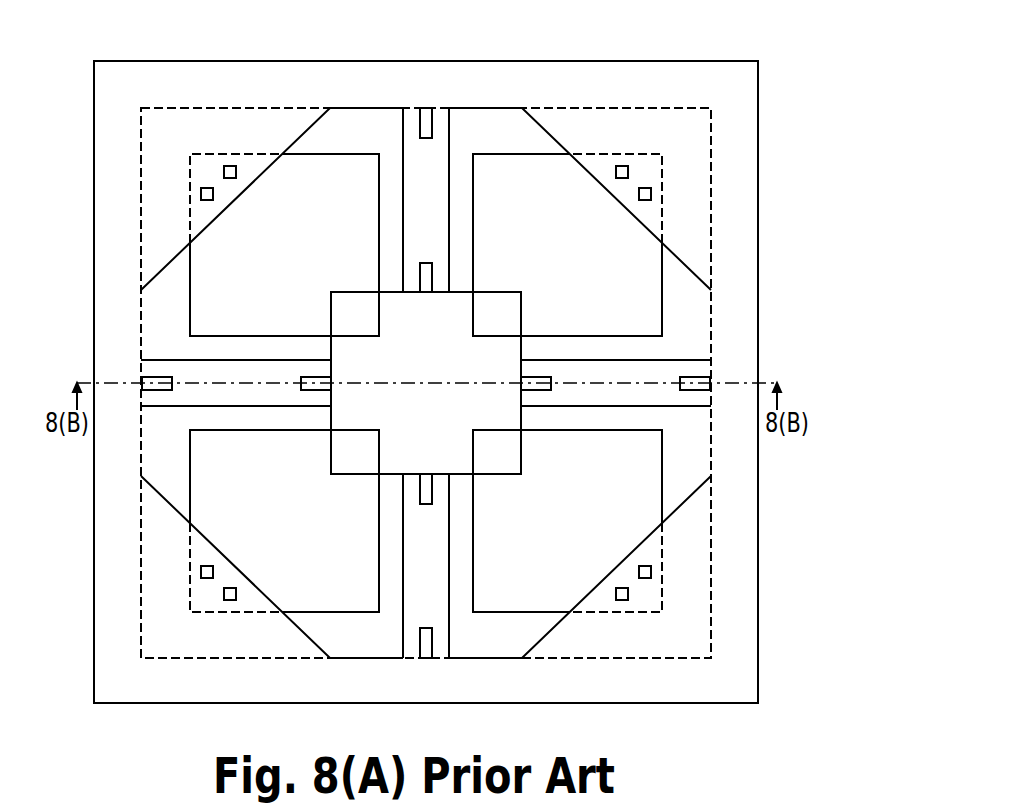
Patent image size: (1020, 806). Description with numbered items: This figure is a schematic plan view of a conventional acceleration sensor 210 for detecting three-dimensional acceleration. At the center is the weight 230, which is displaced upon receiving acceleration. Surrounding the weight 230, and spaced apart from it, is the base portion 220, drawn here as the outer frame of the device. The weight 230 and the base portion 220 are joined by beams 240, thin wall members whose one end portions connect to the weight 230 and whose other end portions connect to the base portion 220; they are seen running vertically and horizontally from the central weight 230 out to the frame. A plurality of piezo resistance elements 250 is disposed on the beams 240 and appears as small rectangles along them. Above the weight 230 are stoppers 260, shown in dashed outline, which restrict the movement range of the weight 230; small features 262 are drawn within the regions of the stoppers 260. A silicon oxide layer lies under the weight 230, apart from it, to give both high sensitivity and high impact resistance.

The acceleration sensor 210 is at (816, 18).
The base portion 220 is at (213, 84).
The weight 230 is at (358, 130).
The beams 240 is at (427, 122).
The piezo resistance elements 250 is at (690, 380).
The stoppers 260 is at (164, 152).
The small pads 262 is at (200, 194).